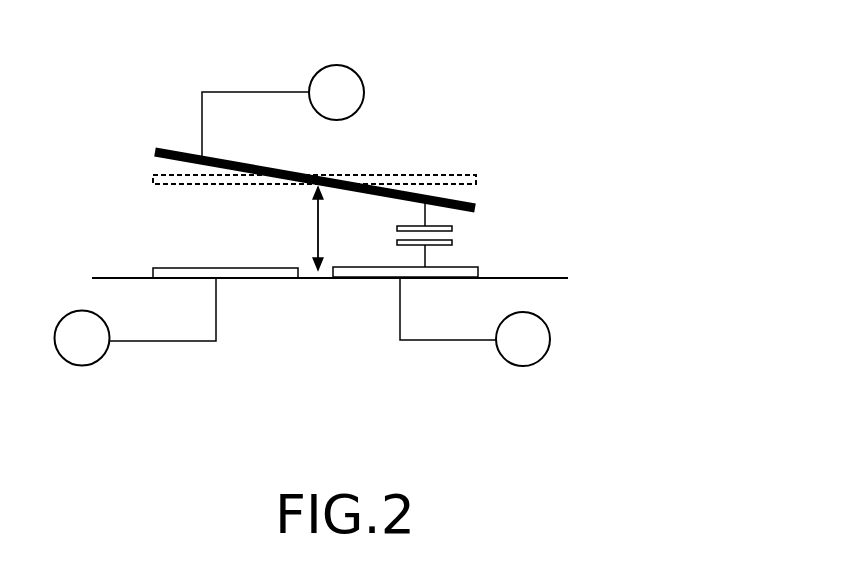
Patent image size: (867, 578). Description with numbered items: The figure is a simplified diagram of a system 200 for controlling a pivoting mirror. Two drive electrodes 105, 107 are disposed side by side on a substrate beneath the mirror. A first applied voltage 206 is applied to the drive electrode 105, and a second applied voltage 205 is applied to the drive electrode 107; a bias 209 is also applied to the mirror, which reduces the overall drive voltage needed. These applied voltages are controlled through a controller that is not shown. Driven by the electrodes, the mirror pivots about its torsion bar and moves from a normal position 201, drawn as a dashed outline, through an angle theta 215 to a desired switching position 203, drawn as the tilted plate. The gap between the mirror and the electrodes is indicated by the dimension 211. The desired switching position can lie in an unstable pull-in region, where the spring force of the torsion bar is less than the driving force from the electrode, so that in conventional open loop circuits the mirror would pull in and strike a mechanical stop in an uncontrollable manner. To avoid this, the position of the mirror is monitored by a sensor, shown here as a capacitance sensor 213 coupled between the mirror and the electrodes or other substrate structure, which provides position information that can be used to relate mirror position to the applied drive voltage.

The system 200 is at (627, 75).
The bias 209 is at (352, 70).
The normal position 201 is at (428, 177).
The desired switching position 203 is at (475, 208).
The angle theta 215 is at (493, 191).
The capacitance sensor 213 is at (453, 243).
The gap g between mirror and electrode 211 is at (313, 232).
The drive electrode 107 is at (250, 278).
The drive electrode 105 is at (365, 277).
The second applied voltage 205 is at (73, 363).
The first applied voltage 206 is at (547, 352).